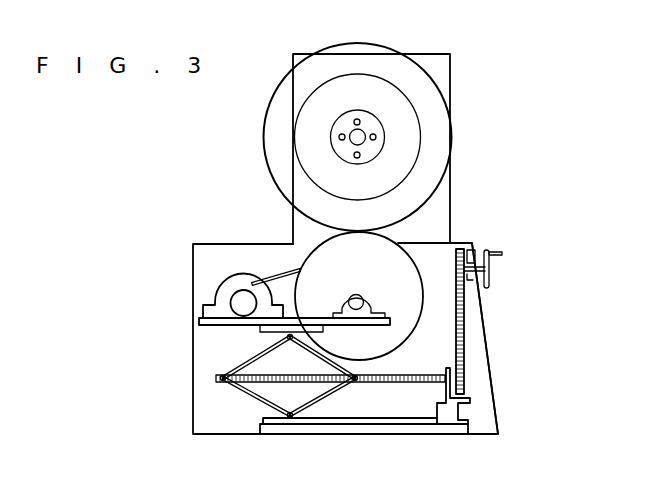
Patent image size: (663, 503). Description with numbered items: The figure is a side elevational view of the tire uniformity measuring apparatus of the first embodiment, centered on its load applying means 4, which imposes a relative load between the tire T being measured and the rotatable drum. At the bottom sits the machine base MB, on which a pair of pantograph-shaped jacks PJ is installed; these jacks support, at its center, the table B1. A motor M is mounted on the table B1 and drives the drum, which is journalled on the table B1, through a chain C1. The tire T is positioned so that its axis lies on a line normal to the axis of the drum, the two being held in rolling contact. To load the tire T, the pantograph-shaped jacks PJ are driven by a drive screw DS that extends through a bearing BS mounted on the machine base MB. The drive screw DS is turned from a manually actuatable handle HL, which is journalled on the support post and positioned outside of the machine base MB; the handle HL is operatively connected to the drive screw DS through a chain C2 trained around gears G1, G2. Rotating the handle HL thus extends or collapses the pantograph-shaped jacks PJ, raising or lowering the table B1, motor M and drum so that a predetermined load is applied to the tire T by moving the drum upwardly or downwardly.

The tire T is at (384, 56).
The idler roller I is at (405, 274).
The motor M is at (226, 289).
The chain C1 is at (282, 272).
The table B1 is at (215, 326).
The pantograph-shaped jacks PJ is at (242, 396).
The drive screw DS is at (397, 384).
The bearing BS is at (470, 402).
The machine base MB is at (323, 437).
The chain C2 is at (468, 329).
The gear G2 is at (471, 262).
The gear G1 is at (467, 377).
The manually actuatable handle HL is at (489, 270).
The load applying means 4 is at (503, 346).